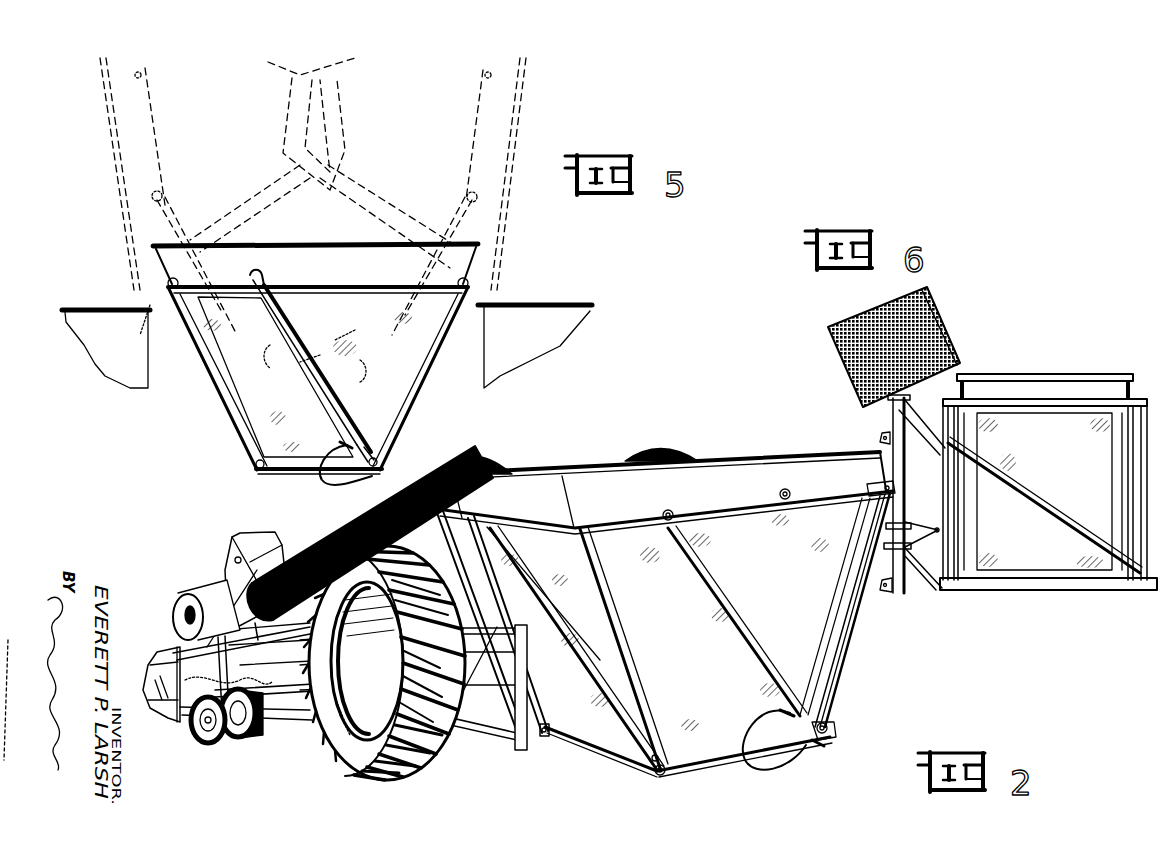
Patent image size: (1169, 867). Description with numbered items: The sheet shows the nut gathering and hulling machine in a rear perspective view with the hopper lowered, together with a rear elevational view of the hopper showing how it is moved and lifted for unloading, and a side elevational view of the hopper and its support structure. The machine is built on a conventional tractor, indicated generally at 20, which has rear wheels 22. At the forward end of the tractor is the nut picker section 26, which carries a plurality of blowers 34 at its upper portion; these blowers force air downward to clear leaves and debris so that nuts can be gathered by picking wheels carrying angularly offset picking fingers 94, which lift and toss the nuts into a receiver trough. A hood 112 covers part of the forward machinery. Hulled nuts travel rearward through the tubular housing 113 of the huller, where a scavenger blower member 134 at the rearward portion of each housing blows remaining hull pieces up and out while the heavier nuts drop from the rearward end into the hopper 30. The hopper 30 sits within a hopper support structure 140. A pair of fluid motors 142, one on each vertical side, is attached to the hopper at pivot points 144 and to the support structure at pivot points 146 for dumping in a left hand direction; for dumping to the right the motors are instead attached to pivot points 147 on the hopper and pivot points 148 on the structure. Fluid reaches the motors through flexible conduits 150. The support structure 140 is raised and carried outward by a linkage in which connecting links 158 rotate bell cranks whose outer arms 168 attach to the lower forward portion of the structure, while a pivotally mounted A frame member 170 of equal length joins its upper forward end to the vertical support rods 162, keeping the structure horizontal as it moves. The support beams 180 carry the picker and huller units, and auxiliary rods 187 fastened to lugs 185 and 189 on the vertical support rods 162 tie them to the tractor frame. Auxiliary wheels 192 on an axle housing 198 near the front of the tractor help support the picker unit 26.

In FIG. 2, the tractor 20 is at (216, 533).
In FIG. 2, the rear wheels 22 is at (345, 760).
In FIG. 2, the nut picker section 26 is at (164, 623).
In FIG. 5, the hopper 30 is at (125, 197).
In FIG. 6, the hopper 30 is at (1087, 388).
In FIG. 2, the hopper 30 is at (748, 465).
In FIG. 2, the blowers 34 is at (186, 608).
In FIG. 2, the picking fingers 94 is at (253, 678).
In FIG. 2, the hood 112 is at (235, 558).
In FIG. 6, the tubular housing 113 is at (858, 322).
In FIG. 2, the tubular housing 113 is at (313, 545).
In FIG. 2, the scavenger blower member 134 is at (466, 524).
In FIG. 5, the hopper support structure 140 is at (230, 409).
In FIG. 6, the hopper support structure 140 is at (1108, 592).
In FIG. 2, the hopper support structure 140 is at (623, 690).
In FIG. 5, the fluid motors 142 is at (322, 397).
In FIG. 6, the fluid motors 142 is at (1133, 467).
In FIG. 2, the fluid motors 142 is at (748, 638).
In FIG. 2, the pivot points 144 is at (672, 511).
In FIG. 2, the pivot points 146 is at (828, 728).
In FIG. 2, the pivot points 147 is at (790, 493).
In FIG. 2, the pivot points 148 is at (547, 740).
In FIG. 5, the flexible conduits 150 is at (340, 484).
In FIG. 2, the flexible conduits 150 is at (810, 756).
In FIG. 6, the connecting links 158 is at (914, 520).
In FIG. 6, the vertical support rods 162 is at (905, 596).
In FIG. 2, the vertical support rods 162 is at (515, 745).
In FIG. 6, the outer arm 168 is at (921, 585).
In FIG. 6, the A frame member 170 is at (926, 422).
In FIG. 2, the support beams 180 is at (500, 474).
In FIG. 6, the lug 185 is at (884, 433).
In FIG. 2, the rods 187 is at (476, 706).
In FIG. 6, the lug 189 is at (888, 594).
In FIG. 2, the auxiliary wheels 192 is at (227, 737).
In FIG. 2, the axle housing 198 is at (202, 723).